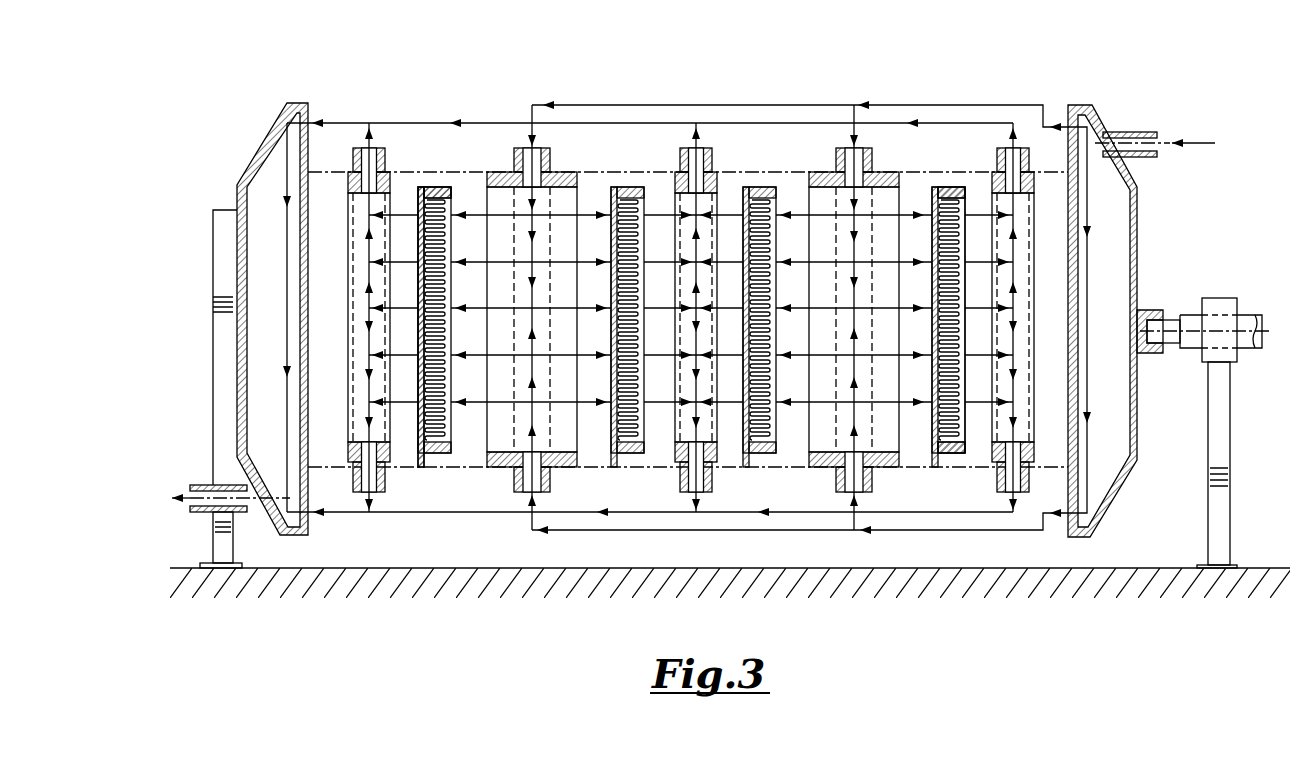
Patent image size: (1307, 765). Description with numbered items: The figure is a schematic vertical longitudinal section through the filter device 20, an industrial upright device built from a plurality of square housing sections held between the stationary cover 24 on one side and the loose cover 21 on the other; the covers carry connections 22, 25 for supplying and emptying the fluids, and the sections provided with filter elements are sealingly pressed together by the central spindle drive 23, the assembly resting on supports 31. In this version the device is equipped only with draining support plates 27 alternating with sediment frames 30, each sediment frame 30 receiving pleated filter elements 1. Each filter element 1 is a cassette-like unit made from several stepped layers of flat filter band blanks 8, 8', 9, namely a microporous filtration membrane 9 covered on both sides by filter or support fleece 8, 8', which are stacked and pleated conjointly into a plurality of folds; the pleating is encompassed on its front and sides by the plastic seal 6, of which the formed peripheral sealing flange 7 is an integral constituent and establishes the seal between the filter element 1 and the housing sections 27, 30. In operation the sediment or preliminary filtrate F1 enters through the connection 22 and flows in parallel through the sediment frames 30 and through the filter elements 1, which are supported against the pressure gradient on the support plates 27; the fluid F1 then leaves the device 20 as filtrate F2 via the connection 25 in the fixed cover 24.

The pleated filter element 1 is at (437, 181).
The plastic seal 6 is at (940, 191).
The peripheral sealing flange 7 is at (963, 192).
The filter fleece 8 is at (736, 351).
The support fleece 8' is at (421, 327).
The microporous filtration membrane 9 is at (951, 447).
The filter device 20 is at (1083, 64).
The loose cover 21 is at (1137, 226).
The connection 22 is at (1142, 132).
The central spindle drive 23 is at (1190, 319).
The stationary cover 24 is at (270, 142).
The connection 25 is at (203, 484).
The support plate 27 is at (398, 175).
The sediment frame 30 is at (500, 175).
The support stand 31 is at (233, 545).
The sediment F1 is at (538, 110).
The filtrate F2 is at (285, 302).